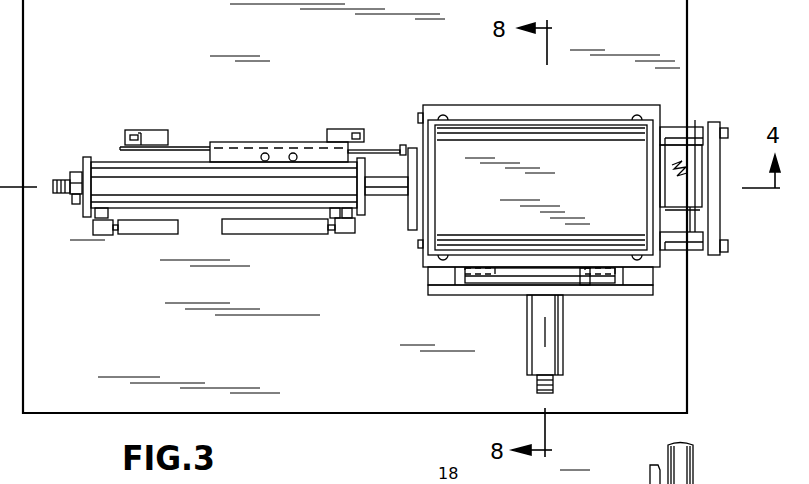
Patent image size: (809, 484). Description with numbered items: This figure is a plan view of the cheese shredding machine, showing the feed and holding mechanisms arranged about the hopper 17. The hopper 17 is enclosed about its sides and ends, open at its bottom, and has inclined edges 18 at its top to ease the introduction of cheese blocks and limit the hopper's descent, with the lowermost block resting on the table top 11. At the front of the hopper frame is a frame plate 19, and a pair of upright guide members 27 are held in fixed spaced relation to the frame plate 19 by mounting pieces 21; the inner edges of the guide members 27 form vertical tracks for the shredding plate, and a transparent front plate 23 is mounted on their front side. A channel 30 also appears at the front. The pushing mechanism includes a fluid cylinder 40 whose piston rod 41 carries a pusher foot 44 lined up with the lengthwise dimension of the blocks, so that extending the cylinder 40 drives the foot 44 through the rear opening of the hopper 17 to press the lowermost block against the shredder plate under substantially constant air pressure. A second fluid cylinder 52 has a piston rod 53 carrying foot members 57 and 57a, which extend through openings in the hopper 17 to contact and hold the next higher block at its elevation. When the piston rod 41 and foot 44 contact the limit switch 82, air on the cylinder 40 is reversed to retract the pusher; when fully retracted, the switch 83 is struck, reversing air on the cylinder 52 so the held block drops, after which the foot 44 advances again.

The table top 11 is at (343, 206).
The hopper 17 is at (457, 138).
The inclined edges 18 is at (495, 125).
The frame plate 19 is at (650, 480).
The mounting pieces 21 is at (678, 127).
The front plate 23 is at (710, 148).
The upright guide members 27 is at (710, 123).
The channel 30 is at (700, 483).
The fluid cylinder 40 is at (209, 196).
The piston rod 41 is at (387, 197).
The pusher foot 44 is at (411, 232).
The fluid cylinder 52 is at (563, 335).
The piston rod 53 is at (540, 285).
The foot member 57 is at (623, 272).
The foot member 57a is at (465, 270).
The limit switch 82 is at (343, 129).
The switch 83 is at (158, 130).